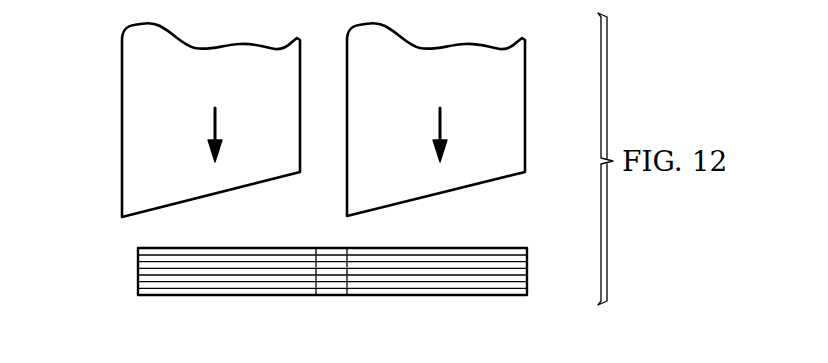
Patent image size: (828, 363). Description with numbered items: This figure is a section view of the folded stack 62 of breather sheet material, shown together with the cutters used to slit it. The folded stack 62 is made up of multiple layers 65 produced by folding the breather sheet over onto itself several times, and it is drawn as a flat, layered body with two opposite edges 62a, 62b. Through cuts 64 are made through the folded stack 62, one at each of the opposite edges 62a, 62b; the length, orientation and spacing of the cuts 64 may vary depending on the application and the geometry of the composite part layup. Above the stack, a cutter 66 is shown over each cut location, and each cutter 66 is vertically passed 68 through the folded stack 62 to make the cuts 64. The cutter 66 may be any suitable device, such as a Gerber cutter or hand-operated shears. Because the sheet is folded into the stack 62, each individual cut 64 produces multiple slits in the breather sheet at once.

The folded stack 62 is at (299, 296).
The opposite edge of the stack 62a is at (103, 235).
The opposite edge of the stack 62b is at (513, 233).
The through cut 64 is at (308, 279).
The layers 65 is at (207, 270).
The cutter 66 is at (130, 82).
The vertical pass of the cutter 68 is at (211, 118).